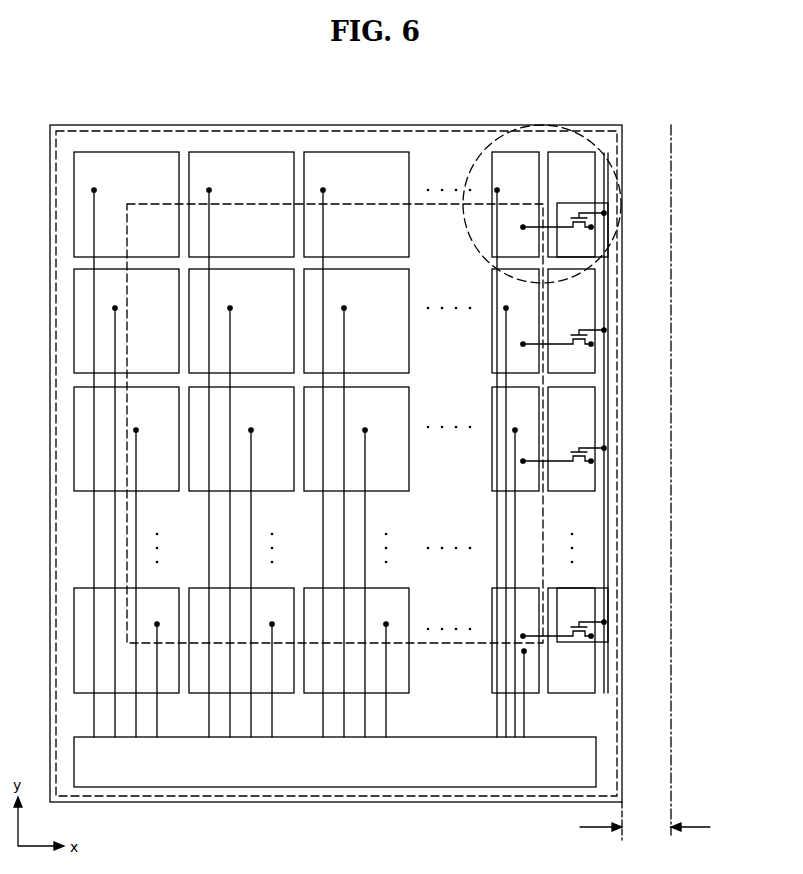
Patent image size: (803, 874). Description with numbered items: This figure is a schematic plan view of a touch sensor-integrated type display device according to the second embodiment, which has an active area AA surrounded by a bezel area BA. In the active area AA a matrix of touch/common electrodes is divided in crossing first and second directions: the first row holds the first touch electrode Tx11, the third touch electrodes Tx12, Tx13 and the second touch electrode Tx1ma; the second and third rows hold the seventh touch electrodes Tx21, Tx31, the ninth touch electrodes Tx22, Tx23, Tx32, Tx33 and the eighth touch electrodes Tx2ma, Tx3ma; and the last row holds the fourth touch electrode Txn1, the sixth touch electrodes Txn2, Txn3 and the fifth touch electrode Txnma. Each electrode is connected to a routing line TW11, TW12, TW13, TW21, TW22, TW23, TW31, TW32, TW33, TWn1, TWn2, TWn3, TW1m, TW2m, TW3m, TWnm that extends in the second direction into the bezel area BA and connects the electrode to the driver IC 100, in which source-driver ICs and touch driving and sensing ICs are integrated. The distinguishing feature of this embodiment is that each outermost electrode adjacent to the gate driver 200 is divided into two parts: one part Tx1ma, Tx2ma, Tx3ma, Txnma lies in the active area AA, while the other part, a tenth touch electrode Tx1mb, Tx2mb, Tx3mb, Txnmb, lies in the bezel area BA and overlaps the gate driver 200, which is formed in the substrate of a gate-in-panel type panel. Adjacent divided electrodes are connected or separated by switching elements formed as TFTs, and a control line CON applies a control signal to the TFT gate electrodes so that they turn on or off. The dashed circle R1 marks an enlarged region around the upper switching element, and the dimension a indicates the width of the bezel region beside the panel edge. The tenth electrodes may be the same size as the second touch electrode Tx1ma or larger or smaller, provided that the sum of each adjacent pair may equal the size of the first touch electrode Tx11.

The driver IC 100 is at (455, 773).
The gate driver 200 is at (583, 203).
The active area AA is at (416, 204).
The bezel area BA is at (485, 130).
The enlarged region R1 is at (540, 125).
The control line CON is at (603, 413).
The bezel width a is at (645, 482).
The first touch electrode Tx11 is at (126, 204).
The third touch electrode Tx12 is at (241, 204).
The third touch electrode Tx13 is at (356, 204).
The seventh touch electrode Tx21 is at (126, 321).
The ninth touch electrode Tx22 is at (241, 321).
The ninth touch electrode Tx23 is at (356, 321).
The seventh touch electrode Tx31 is at (126, 439).
The ninth touch electrode Tx32 is at (241, 439).
The ninth touch electrode Tx33 is at (356, 439).
The fourth touch electrode Txn1 is at (126, 640).
The sixth touch electrode Txn2 is at (241, 640).
The sixth touch electrode Txn3 is at (356, 640).
The routing line TW11 is at (95, 236).
The routing line TW12 is at (210, 236).
The routing line TW13 is at (324, 236).
The routing line TW21 is at (116, 351).
The routing line TW22 is at (231, 351).
The routing line TW23 is at (345, 351).
The routing line TW31 is at (137, 508).
The routing line TW32 is at (252, 508).
The routing line TW33 is at (366, 508).
The routing line TWn1 is at (158, 716).
The routing line TWn2 is at (273, 716).
The routing line TWn3 is at (387, 716).
The second touch electrode Tx1ma is at (492, 172).
The eighth touch electrode Tx2ma is at (492, 290).
The eighth touch electrode Tx3ma is at (492, 402).
The fifth touch electrode Txnma is at (492, 602).
The routing line TW1m is at (497, 243).
The routing line TW2m is at (506, 333).
The routing line TW3m is at (515, 528).
The routing line TWnm is at (524, 678).
The tenth touch electrode Tx1mb is at (595, 243).
The tenth touch electrode Tx2mb is at (595, 360).
The tenth touch electrode Tx3mb is at (595, 478).
The tenth touch electrode Txnmb is at (595, 680).